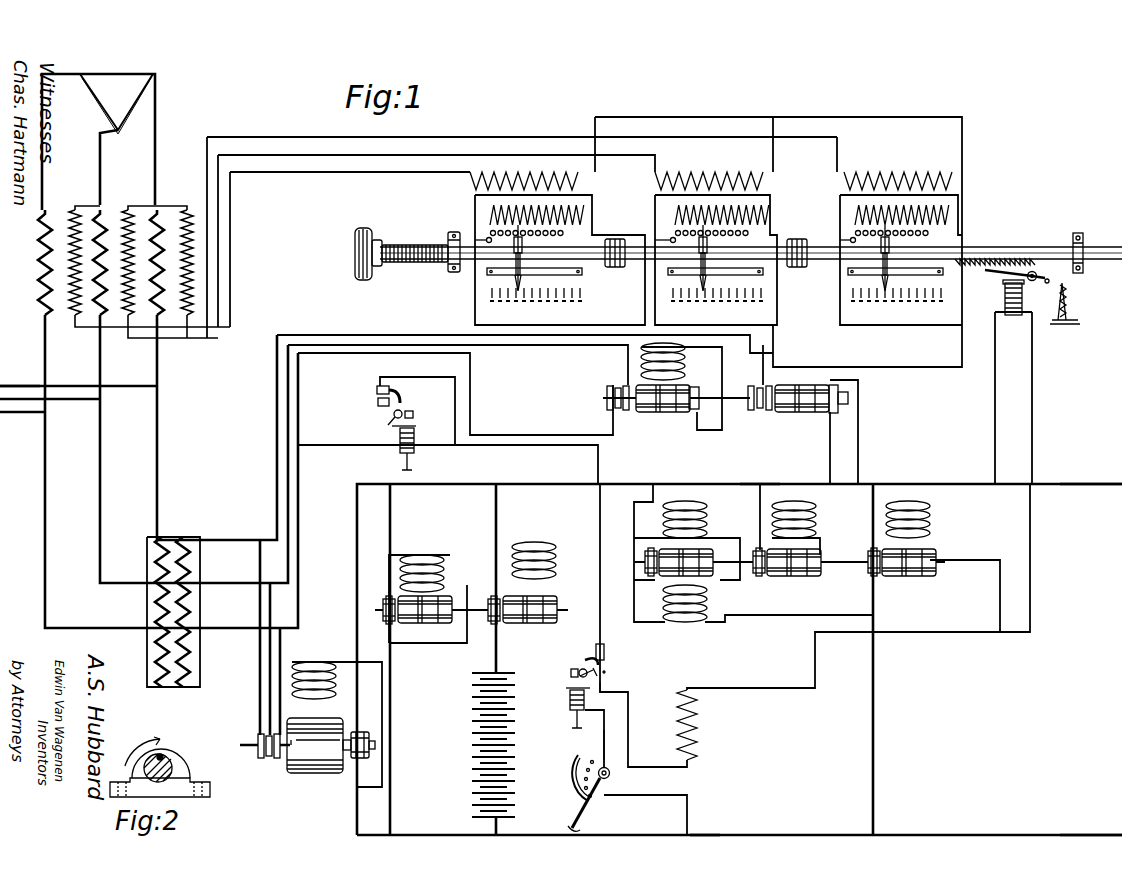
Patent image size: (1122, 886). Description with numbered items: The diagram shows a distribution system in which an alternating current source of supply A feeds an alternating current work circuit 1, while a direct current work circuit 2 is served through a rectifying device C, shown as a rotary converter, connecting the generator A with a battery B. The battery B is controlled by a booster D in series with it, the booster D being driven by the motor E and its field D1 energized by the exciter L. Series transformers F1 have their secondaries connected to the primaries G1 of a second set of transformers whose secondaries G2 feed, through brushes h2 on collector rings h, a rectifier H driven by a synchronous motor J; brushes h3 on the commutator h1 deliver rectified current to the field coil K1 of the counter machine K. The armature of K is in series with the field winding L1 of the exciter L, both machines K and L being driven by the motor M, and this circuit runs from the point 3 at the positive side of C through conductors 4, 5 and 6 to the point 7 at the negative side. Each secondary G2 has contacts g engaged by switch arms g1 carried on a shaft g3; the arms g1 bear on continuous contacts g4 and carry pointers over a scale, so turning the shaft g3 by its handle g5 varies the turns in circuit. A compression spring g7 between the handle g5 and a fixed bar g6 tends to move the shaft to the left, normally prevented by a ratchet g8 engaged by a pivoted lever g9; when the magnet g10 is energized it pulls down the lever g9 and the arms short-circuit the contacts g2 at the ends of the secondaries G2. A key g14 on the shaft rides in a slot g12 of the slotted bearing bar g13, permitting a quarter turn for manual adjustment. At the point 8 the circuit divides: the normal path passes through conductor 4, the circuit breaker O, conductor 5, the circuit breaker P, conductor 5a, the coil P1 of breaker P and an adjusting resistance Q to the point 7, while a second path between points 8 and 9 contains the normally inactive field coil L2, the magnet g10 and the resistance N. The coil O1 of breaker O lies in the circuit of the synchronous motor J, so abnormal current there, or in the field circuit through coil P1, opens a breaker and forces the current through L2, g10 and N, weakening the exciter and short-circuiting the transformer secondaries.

In FIG. 1, the alternating current source of supply A is at (98, 142).
In FIG. 1, the series transformer F1 is at (125, 262).
In FIG. 1, the primary of second transformer set G1 is at (725, 180).
In FIG. 1, the secondary of second transformer set G2 is at (735, 215).
In FIG. 1, the contacts g is at (932, 240).
In FIG. 1, the short-circuiting contacts g2 is at (665, 246).
In FIG. 1, the switch arm g1 is at (930, 292).
In FIG. 1, the shaft g3 is at (805, 240).
In FIG. 1, the continuous contacts g4 is at (845, 300).
In FIG. 1, the handle g5 is at (355, 260).
In FIG. 1, the fixed bar g6 is at (455, 232).
In FIG. 1, the compression spring g7 is at (410, 245).
In FIG. 1, the ratchet g8 is at (1000, 259).
In FIG. 1, the pivoted lever g9 is at (1000, 272).
In FIG. 1, the magnet g10 is at (1013, 315).
In FIG. 1, the slot g12 is at (751, 253).
In FIG. 2, the slot g12 is at (162, 754).
In FIG. 1, the slotted bearing bar g13 is at (1080, 233).
In FIG. 2, the slotted bearing bar g13 is at (183, 770).
In FIG. 2, the key g14 is at (172, 752).
In FIG. 1, the circuit breaker O is at (398, 404).
In FIG. 1, the coil of circuit breaker O O1 is at (414, 440).
In FIG. 1, the synchronous motor J is at (660, 412).
In FIG. 1, the rectifier H is at (795, 412).
In FIG. 1, the collector rings h is at (752, 410).
In FIG. 1, the commutator h1 is at (848, 396).
In FIG. 1, the brushes on collector rings h2 is at (760, 388).
In FIG. 1, the brushes on commutator h3 is at (838, 430).
In FIG. 1, the counter machine K is at (780, 576).
In FIG. 1, the field coil of counter machine K1 is at (810, 500).
In FIG. 1, the exciter L is at (665, 555).
In FIG. 1, the field winding of exciter L1 is at (707, 512).
In FIG. 1, the normally inactive field coil L2 is at (690, 622).
In FIG. 1, the motor M is at (930, 522).
In FIG. 1, the motor E is at (445, 570).
In FIG. 1, the booster D is at (528, 621).
In FIG. 1, the booster field D1 is at (556, 552).
In FIG. 1, the rectifying device C is at (320, 773).
In FIG. 1, the battery B is at (481, 745).
In FIG. 1, the circuit breaker P is at (587, 658).
In FIG. 1, the coil of circuit breaker P P1 is at (568, 708).
In FIG. 1, the adjusting resistance Q is at (578, 778).
In FIG. 1, the resistance N is at (697, 726).
In FIG. 1, the alternating current work circuit 1 is at (8, 385).
In FIG. 1, the direct current work circuit 2 is at (1087, 826).
In FIG. 1, the point 3 is at (760, 484).
In FIG. 1, the conductor 4 is at (550, 427).
In FIG. 1, the conductor 5 is at (550, 454).
In FIG. 1, the conductor 5a is at (604, 672).
In FIG. 1, the conductor 6 is at (610, 745).
In FIG. 1, the point 7 is at (690, 835).
In FIG. 1, the point 8 is at (636, 502).
In FIG. 1, the point 9 is at (602, 690).